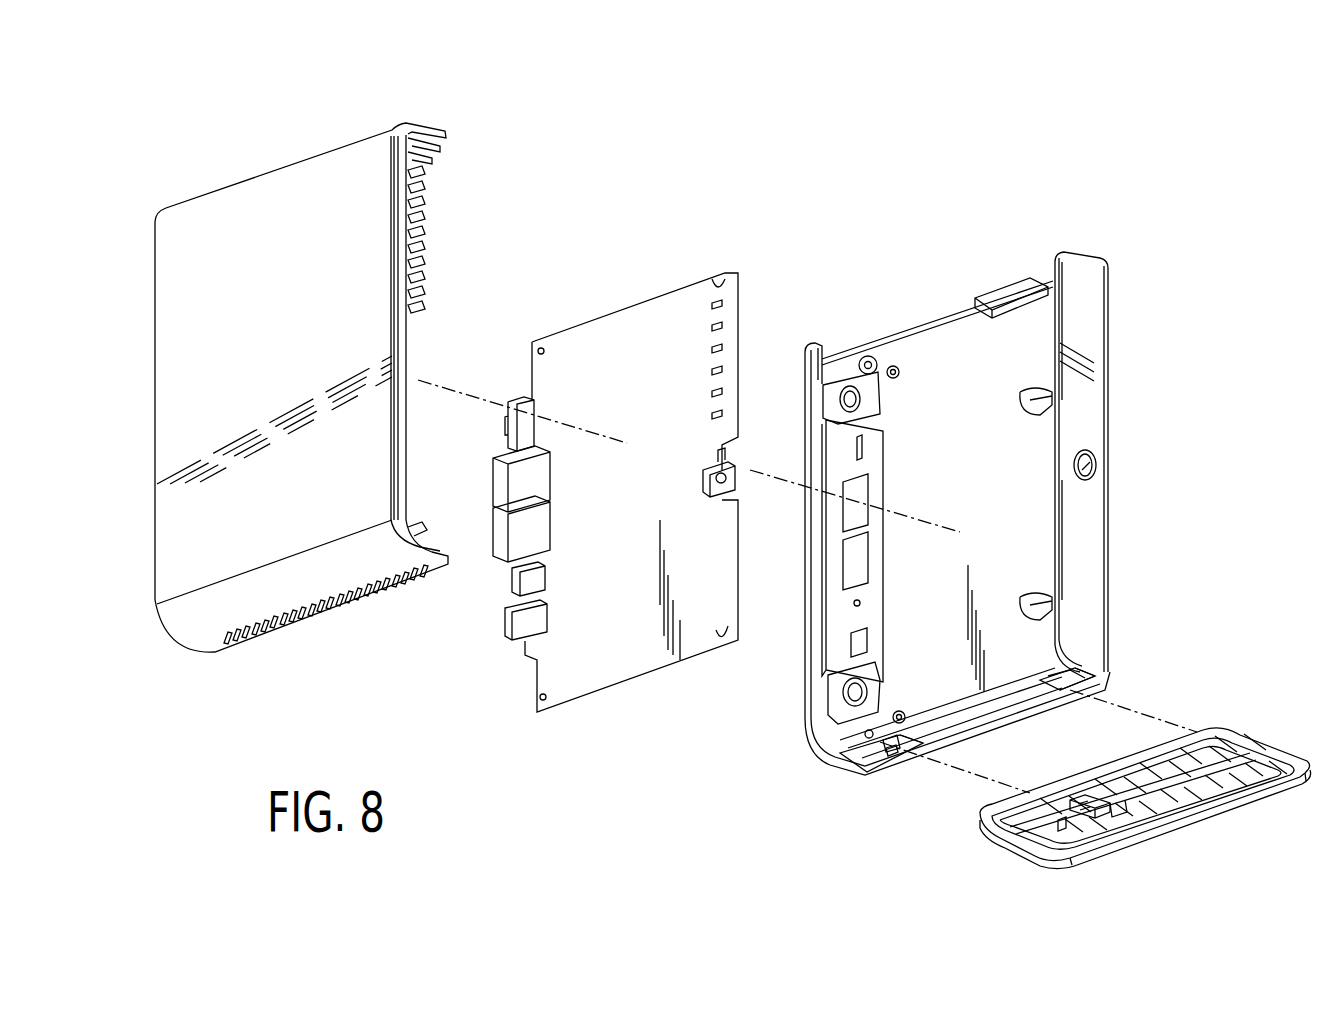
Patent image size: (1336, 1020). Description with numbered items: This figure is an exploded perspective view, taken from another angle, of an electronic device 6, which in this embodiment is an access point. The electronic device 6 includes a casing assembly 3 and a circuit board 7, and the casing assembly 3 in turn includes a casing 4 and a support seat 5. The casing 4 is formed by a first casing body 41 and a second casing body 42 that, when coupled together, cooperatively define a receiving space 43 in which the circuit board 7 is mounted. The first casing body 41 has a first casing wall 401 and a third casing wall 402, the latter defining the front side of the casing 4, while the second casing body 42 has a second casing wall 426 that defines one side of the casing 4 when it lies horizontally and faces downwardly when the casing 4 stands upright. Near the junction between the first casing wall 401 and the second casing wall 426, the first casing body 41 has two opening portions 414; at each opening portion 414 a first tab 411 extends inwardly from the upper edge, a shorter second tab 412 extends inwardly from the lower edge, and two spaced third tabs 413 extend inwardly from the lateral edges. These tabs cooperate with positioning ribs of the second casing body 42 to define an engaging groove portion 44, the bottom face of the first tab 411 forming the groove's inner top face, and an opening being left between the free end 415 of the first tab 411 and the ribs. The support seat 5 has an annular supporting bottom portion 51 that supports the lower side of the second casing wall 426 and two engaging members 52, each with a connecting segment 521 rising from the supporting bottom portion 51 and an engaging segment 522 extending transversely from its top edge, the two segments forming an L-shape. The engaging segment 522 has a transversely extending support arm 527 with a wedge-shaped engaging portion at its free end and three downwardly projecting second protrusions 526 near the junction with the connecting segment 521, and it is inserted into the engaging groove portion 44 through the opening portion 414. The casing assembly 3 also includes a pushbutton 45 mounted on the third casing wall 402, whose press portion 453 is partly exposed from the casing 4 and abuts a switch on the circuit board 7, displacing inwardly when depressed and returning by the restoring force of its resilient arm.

The casing assembly 3 is at (1001, 493).
The casing 4 is at (301, 392).
The support seat 5 is at (1147, 762).
The electronic device 6 is at (1212, 83).
The circuit board 7 is at (645, 690).
The first casing body 41 is at (1092, 334).
The second casing body 42 is at (227, 248).
The receiving space 43 is at (945, 368).
The engaging groove portion 44 is at (1078, 688).
The pushbutton 45 is at (1035, 478).
The supporting bottom portion 51 is at (1280, 790).
The engaging member 52 is at (1165, 805).
The first casing wall 401 is at (1000, 445).
The third casing wall 402 is at (1082, 543).
The first tab 411 is at (1068, 680).
The second tab 412 is at (1088, 690).
The third tab 413 is at (888, 748).
The opening portion 414 is at (905, 756).
The free end 415 is at (905, 723).
The second casing wall 426 is at (210, 652).
The press portion 453 is at (1088, 470).
The connecting segment 521 is at (1122, 805).
The engaging segment 522 is at (1082, 800).
The second protrusion 526 is at (1088, 818).
The support arm 527 is at (1072, 812).